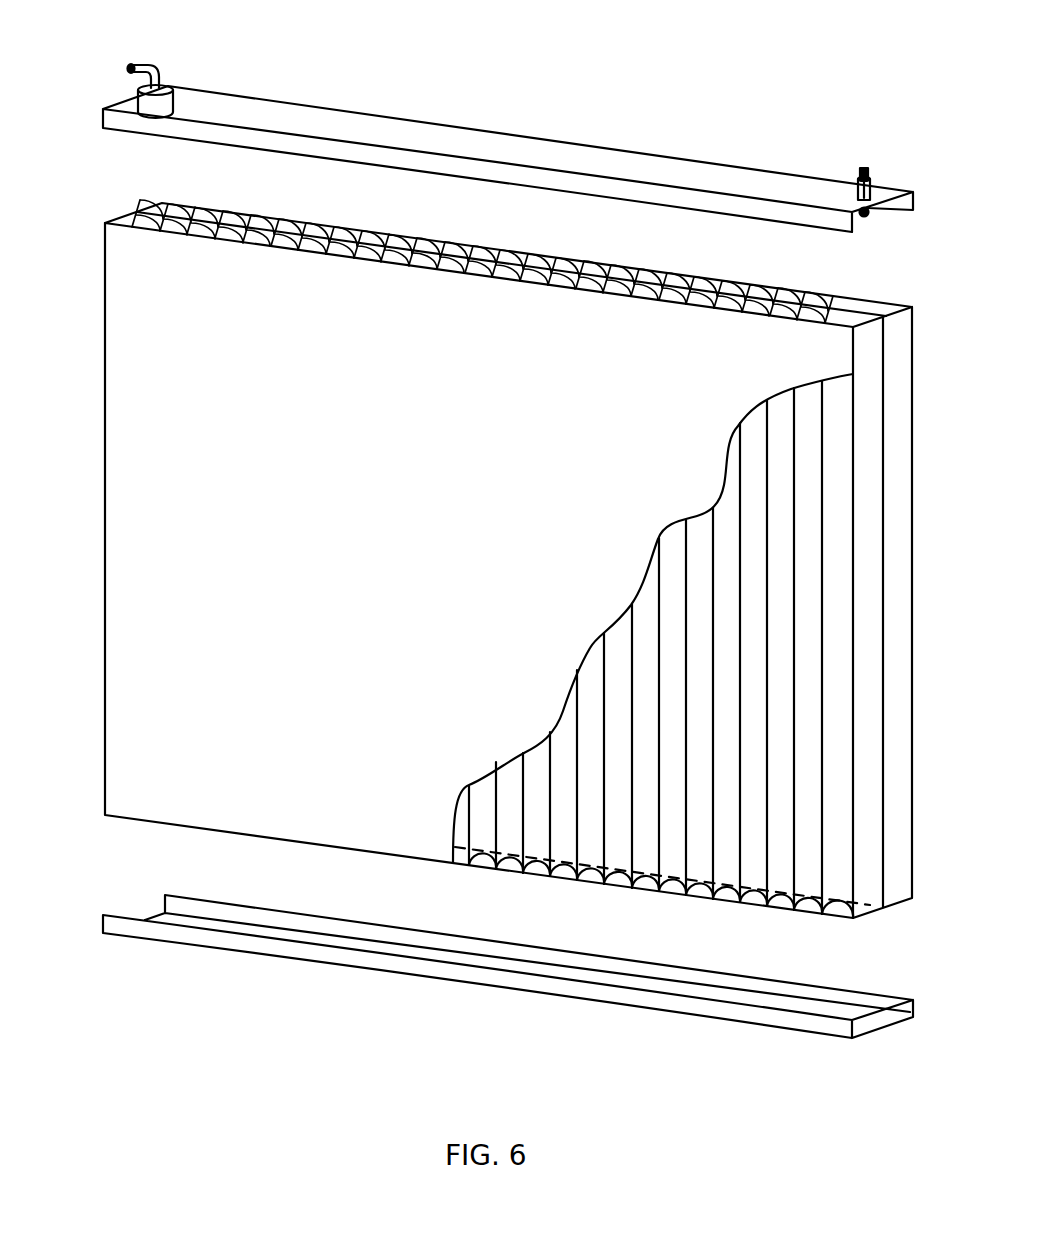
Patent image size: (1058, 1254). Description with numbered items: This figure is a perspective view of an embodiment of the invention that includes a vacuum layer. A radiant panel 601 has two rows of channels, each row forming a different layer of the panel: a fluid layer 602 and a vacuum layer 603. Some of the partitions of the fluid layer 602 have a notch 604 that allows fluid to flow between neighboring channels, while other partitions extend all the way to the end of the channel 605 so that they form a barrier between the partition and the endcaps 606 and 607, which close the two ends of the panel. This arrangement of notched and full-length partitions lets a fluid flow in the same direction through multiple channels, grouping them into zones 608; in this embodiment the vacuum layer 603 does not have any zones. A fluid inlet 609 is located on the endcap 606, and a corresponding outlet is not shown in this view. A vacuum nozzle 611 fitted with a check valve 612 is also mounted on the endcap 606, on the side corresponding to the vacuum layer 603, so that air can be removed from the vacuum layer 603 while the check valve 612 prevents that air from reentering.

The radiant panel 601 is at (140, 303).
The fluid layer 602 is at (118, 221).
The vacuum layer 603 is at (154, 204).
The notch 604 is at (380, 250).
The channel 605 is at (703, 897).
The endcap 606 is at (600, 157).
The endcap 607 is at (432, 978).
The zone 608 is at (763, 316).
The fluid inlet 609 is at (164, 62).
The vacuum nozzle 611 is at (858, 172).
The check valve 612 is at (871, 186).